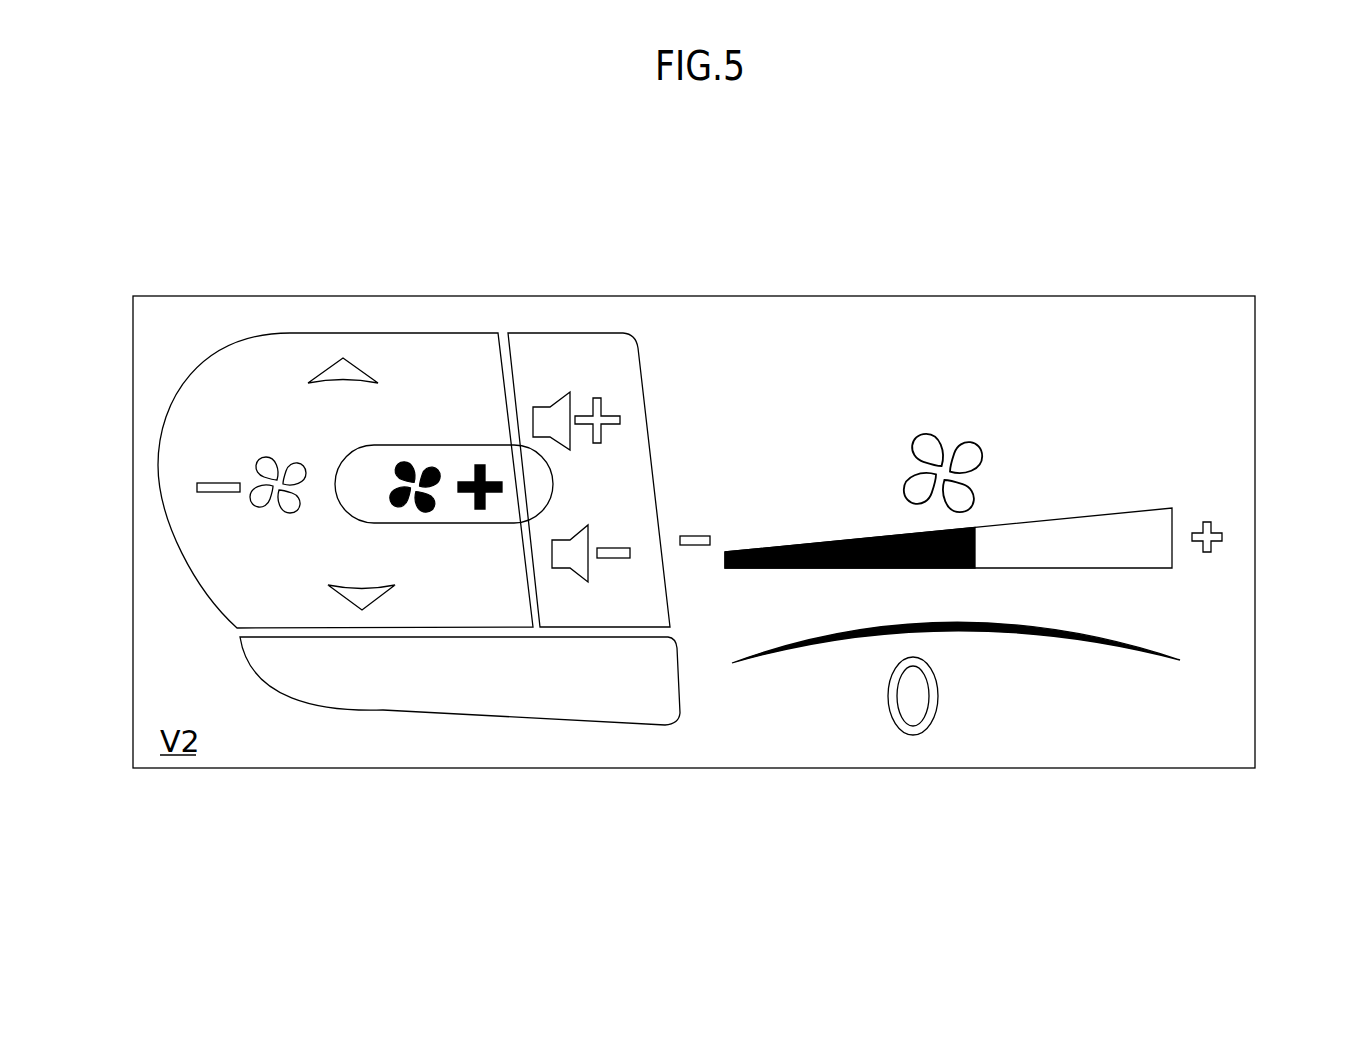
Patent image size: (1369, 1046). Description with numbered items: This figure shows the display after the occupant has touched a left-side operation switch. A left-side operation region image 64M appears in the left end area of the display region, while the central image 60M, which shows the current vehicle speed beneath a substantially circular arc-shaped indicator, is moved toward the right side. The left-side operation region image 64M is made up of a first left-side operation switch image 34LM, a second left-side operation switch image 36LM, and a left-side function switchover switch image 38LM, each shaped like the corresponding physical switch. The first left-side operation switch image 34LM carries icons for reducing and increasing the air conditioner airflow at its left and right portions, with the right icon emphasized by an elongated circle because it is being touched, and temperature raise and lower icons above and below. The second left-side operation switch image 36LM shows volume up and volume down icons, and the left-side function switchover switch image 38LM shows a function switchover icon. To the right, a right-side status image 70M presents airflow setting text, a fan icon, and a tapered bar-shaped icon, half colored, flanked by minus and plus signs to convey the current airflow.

The left-side operation region image 64M is at (197, 357).
The first left-side operation switch image 34LM is at (330, 333).
The second left-side operation switch image 36LM is at (580, 333).
The left-side function switchover switch image 38LM is at (380, 711).
The right-side status image 70M is at (1145, 465).
The central image 60M is at (880, 715).